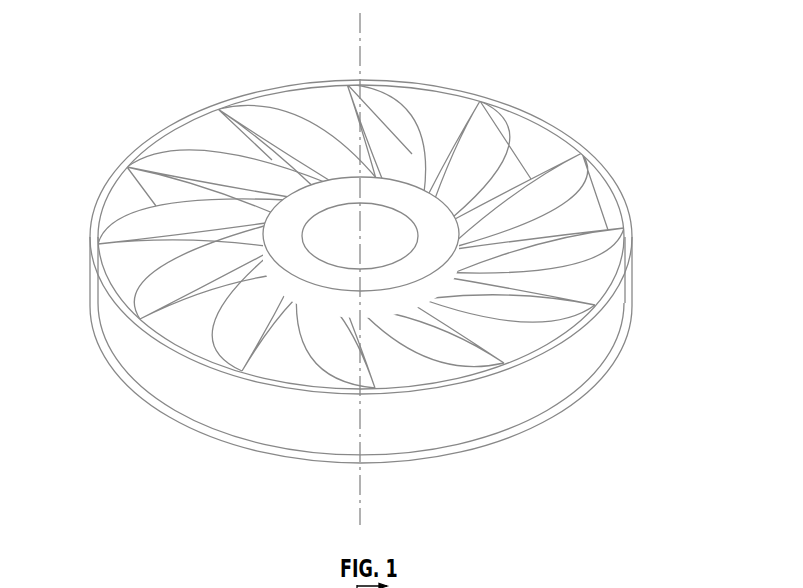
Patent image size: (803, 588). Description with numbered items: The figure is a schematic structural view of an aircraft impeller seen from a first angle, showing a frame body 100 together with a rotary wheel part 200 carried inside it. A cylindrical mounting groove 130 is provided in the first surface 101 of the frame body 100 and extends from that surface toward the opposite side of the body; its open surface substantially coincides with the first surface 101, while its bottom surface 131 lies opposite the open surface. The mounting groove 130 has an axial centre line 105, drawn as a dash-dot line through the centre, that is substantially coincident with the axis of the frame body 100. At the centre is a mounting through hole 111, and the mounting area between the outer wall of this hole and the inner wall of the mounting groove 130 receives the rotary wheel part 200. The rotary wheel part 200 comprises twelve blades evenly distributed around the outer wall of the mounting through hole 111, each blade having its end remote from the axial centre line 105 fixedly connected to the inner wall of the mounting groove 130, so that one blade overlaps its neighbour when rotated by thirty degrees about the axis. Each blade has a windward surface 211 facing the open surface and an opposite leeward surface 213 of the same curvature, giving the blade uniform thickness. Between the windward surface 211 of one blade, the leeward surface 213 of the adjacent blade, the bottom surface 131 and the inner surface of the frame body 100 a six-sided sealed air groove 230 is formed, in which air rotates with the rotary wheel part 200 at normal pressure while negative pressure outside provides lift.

The frame body 100 is at (645, 257).
The first surface 101 is at (98, 200).
The axial centre line 105 is at (360, 40).
The mounting through hole 111 is at (378, 222).
The mounting groove 130 is at (207, 138).
The bottom surface 131 is at (133, 282).
The rotary wheel part 200 is at (422, 370).
The windward surface 211 is at (517, 160).
The leeward surface 213 is at (377, 117).
The air groove 230 is at (445, 120).